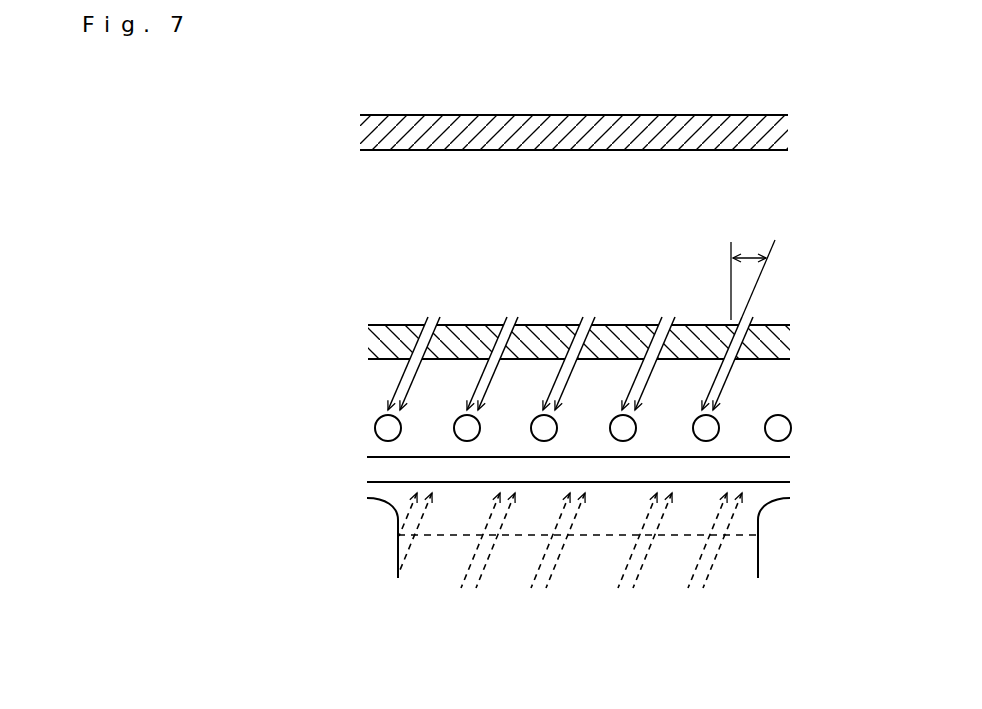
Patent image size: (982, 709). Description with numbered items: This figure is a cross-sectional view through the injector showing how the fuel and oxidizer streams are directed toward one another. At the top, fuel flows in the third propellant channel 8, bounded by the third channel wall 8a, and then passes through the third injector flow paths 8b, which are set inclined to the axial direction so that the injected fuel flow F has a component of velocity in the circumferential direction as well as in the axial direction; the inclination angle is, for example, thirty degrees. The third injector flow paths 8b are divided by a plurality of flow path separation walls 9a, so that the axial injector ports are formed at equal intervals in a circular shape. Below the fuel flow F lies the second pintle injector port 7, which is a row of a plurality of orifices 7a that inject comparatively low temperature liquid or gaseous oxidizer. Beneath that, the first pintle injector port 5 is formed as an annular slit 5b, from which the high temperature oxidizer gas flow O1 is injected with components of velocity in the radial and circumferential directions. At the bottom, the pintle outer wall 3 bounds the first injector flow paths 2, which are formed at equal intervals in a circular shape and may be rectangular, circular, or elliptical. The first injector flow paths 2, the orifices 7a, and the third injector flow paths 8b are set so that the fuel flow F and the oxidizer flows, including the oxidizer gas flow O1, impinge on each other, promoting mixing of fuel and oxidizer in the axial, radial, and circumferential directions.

The third propellant channel 8 is at (550, 140).
The third channel wall 8a is at (613, 133).
The third injector flow path 8b is at (655, 338).
The flow path separation wall 9a is at (457, 340).
The fuel flow F is at (393, 393).
The second pintle injector port 7 is at (630, 414).
The orifice 7a is at (776, 429).
The first pintle injector port 5 is at (591, 469).
The annular slit 5b is at (402, 468).
The pintle outer wall 3 is at (390, 512).
The first injector flow path 2 is at (487, 572).
The oxidizer gas flow O1 is at (578, 515).